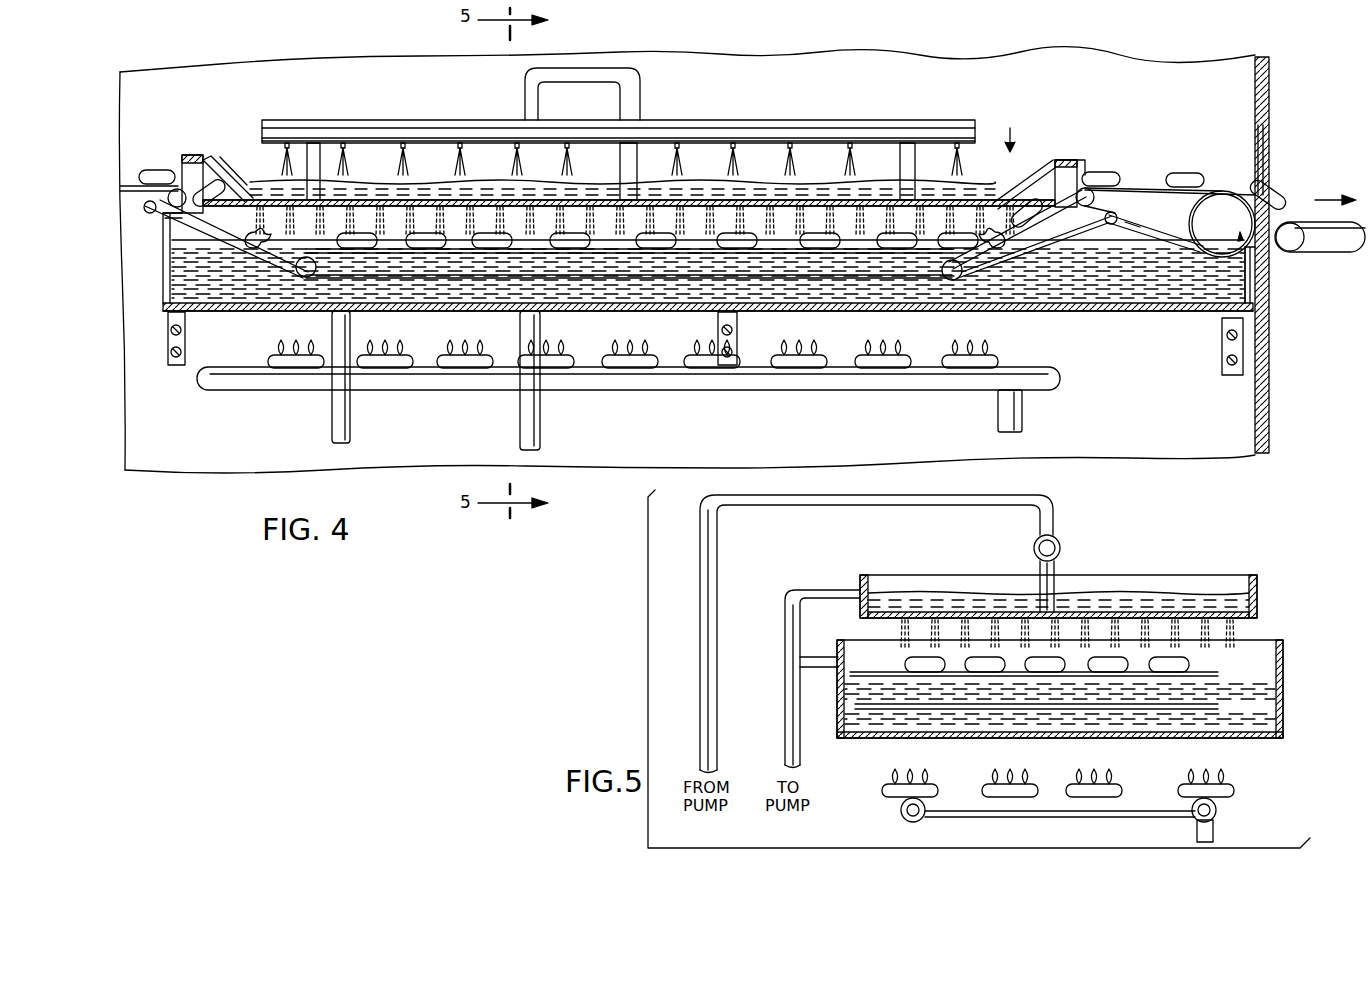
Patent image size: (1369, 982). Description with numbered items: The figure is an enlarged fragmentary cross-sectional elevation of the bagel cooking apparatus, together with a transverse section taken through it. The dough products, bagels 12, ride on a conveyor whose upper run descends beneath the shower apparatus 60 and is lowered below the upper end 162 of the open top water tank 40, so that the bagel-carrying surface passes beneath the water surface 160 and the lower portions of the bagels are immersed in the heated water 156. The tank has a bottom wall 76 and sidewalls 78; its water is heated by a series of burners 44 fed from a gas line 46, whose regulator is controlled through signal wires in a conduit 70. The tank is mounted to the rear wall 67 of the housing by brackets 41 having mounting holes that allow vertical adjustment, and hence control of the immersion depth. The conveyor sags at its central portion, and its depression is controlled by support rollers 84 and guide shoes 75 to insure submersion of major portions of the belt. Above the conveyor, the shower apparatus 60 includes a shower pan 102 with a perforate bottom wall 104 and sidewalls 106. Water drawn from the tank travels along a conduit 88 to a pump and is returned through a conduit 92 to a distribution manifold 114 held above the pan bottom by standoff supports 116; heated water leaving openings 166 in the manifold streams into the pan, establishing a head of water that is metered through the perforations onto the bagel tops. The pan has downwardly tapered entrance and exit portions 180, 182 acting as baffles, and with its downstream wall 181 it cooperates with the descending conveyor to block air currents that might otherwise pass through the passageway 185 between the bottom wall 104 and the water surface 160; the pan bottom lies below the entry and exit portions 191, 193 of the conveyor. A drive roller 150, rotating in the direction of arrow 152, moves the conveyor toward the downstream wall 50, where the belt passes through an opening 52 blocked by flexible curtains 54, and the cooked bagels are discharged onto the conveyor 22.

In FIG. 4, the bagels 12 is at (157, 168).
In FIG. 4, the conveyor 22 is at (1320, 253).
In FIG. 4, the water tank 40 is at (709, 277).
In FIG. 5, the water tank 40 is at (1283, 675).
In FIG. 4, the brackets 41 is at (172, 365).
In FIG. 4, the burners 44 is at (826, 360).
In FIG. 5, the burners 44 is at (1035, 790).
In FIG. 4, the gas line 46 is at (648, 390).
In FIG. 5, the gas line 46 is at (1062, 820).
In FIG. 4, the downstream wall 50 is at (1270, 100).
In FIG. 4, the opening 52 is at (1262, 135).
In FIG. 4, the curtains 54 is at (1264, 158).
In FIG. 4, the shower apparatus 60 is at (1012, 126).
In FIG. 4, the rear wall 67 is at (1175, 455).
In FIG. 4, the conduit 70 is at (1022, 400).
In FIG. 4, the guide shoes 75 is at (262, 246).
In FIG. 4, the bottom wall 76 is at (400, 313).
In FIG. 4, the sidewalls 78 is at (1252, 265).
In FIG. 4, the support rollers 84 is at (687, 236).
In FIG. 4, the conduit 88 is at (350, 405).
In FIG. 5, the conduit 88 is at (786, 672).
In FIG. 4, the conduit 92 is at (520, 408).
In FIG. 5, the conduit 92 is at (698, 663).
In FIG. 4, the shower pan 102 is at (1000, 160).
In FIG. 4, the perforate bottom wall 104 is at (621, 141).
In FIG. 4, the sidewalls 106 is at (220, 165).
In FIG. 4, the distribution manifold 114 is at (618, 134).
In FIG. 4, the standoff supports 116 is at (320, 150).
In FIG. 4, the drive roller 150 is at (1220, 191).
In FIG. 4, the arrow 152 is at (1250, 224).
In FIG. 4, the heated water 156 is at (1113, 290).
In FIG. 4, the water surface 160 is at (1087, 235).
In FIG. 4, the upper end 162 is at (163, 218).
In FIG. 4, the openings 166 is at (660, 143).
In FIG. 4, the entrance portion 180 is at (235, 175).
In FIG. 4, the downstream wall 181 is at (1085, 170).
In FIG. 4, the exit portion 182 is at (1030, 175).
In FIG. 4, the passageway 185 is at (975, 200).
In FIG. 4, the entry portion 191 is at (143, 170).
In FIG. 4, the exit portion 193 is at (1150, 185).